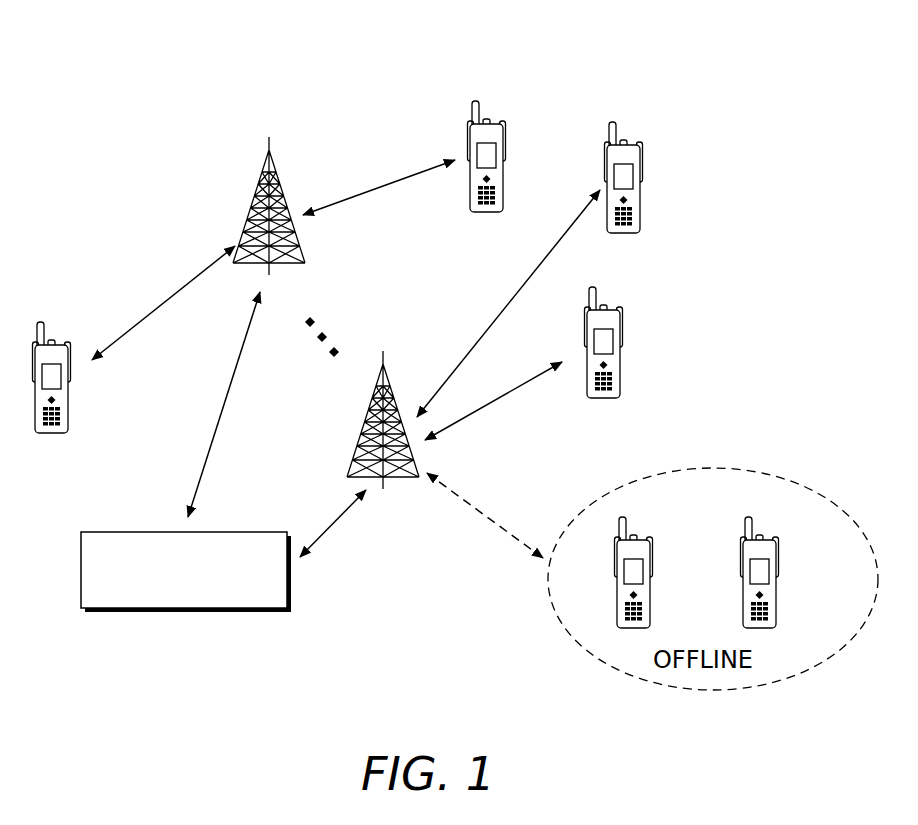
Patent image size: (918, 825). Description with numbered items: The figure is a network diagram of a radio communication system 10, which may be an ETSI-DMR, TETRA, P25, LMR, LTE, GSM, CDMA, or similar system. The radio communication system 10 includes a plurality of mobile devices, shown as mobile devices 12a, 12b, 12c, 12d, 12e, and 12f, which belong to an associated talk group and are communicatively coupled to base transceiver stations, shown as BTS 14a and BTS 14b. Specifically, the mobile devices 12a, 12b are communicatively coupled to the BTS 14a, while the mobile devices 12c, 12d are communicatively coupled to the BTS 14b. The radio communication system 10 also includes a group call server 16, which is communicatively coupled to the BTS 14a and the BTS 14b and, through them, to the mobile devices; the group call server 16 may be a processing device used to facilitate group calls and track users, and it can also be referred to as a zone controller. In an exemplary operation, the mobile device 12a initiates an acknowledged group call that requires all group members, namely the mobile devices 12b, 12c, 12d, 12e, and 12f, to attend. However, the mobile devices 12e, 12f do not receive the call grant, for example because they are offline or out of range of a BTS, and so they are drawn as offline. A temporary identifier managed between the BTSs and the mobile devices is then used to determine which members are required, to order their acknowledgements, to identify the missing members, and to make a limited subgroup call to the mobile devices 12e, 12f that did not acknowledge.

The radio communication system 10 is at (82, 48).
The mobile device 12a is at (57, 342).
The mobile device 12b is at (493, 122).
The mobile device 12c is at (630, 143).
The mobile device 12d is at (609, 308).
The mobile device 12e is at (638, 539).
The mobile device 12f is at (764, 539).
The BTS 14a is at (263, 172).
The BTS 14b is at (375, 394).
The group call server 16 is at (252, 532).